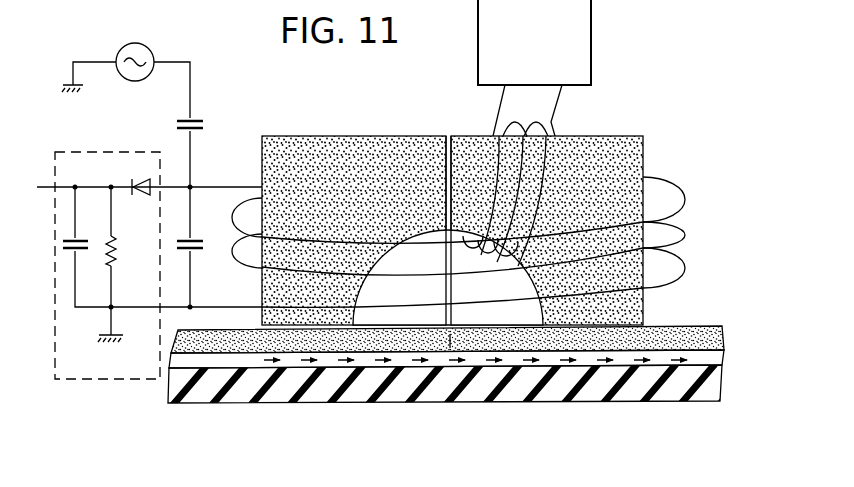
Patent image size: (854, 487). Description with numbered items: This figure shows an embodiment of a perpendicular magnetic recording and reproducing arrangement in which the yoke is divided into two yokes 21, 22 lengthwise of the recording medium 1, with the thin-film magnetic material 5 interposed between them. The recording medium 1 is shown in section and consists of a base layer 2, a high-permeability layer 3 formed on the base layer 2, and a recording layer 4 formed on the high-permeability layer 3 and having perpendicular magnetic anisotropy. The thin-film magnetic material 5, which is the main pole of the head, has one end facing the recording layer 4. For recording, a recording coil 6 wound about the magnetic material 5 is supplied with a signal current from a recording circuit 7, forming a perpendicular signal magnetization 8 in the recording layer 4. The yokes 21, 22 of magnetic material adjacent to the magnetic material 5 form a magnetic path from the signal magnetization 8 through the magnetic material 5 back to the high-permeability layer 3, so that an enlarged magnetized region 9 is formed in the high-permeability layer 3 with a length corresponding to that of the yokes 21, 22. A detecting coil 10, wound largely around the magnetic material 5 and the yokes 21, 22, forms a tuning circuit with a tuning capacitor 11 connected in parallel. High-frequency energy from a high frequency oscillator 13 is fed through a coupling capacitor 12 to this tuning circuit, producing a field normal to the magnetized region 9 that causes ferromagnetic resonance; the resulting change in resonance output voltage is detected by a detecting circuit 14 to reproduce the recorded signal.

The perpendicular magnetic recording medium 1 is at (461, 365).
The base layer 2 is at (678, 402).
The high-permeability layer 3 is at (706, 358).
The recording layer 4 is at (673, 342).
The thin-film magnetic material 5 is at (442, 293).
The recording coil 6 is at (511, 193).
The recording circuit 7 is at (592, 23).
The signal magnetization 8 is at (452, 344).
The magnetized region 9 is at (468, 362).
The detecting coil 10 is at (683, 191).
The tuning capacitor 11 is at (195, 238).
The coupling capacitor 12 is at (196, 118).
The high frequency oscillator 13 is at (135, 43).
The detecting circuit 14 is at (118, 380).
The yoke 21 is at (318, 136).
The yoke 22 is at (620, 136).